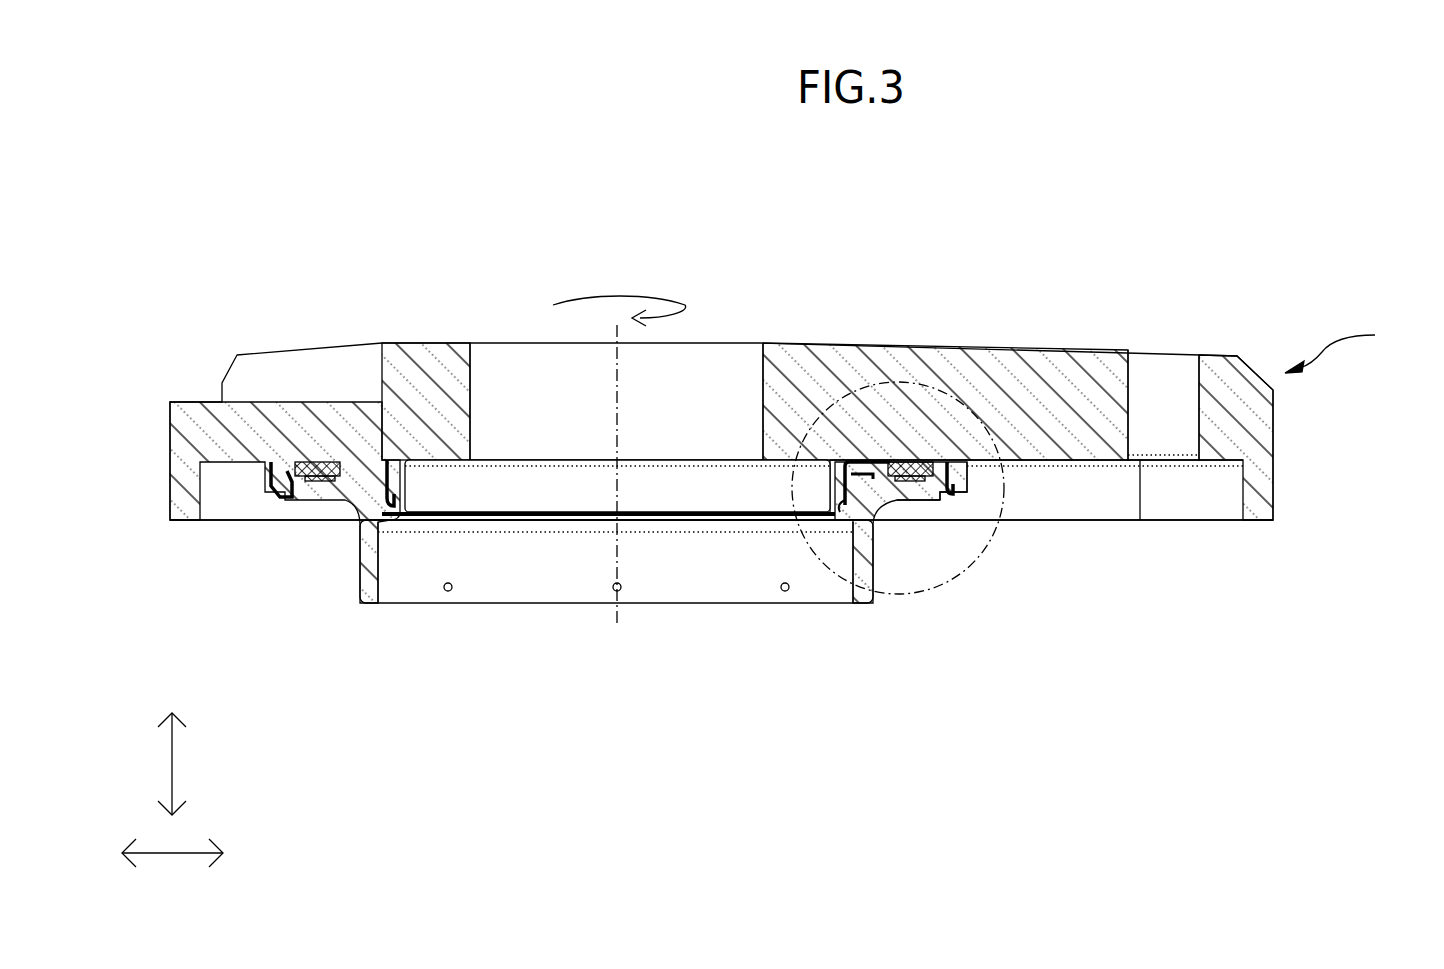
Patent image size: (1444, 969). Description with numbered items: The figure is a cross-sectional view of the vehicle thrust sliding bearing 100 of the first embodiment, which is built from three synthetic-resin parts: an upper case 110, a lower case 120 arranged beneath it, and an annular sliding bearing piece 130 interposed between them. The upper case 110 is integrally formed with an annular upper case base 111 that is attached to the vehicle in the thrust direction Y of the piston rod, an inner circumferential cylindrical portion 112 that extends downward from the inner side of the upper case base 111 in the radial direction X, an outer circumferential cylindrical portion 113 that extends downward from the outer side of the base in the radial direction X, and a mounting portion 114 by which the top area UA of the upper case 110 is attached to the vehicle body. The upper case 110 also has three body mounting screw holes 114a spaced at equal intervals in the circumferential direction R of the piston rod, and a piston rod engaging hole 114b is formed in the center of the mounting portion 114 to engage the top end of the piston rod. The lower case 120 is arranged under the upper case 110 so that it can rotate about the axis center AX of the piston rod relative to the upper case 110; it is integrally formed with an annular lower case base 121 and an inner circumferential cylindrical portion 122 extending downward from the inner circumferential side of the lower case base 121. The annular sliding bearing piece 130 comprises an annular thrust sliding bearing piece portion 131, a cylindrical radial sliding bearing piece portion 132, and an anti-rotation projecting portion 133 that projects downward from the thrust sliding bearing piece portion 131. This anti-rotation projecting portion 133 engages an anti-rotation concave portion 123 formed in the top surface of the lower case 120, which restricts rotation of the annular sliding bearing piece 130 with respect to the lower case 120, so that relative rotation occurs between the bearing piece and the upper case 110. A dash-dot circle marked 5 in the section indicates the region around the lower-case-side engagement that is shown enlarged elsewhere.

The vehicle thrust sliding bearing 100 is at (106, 168).
The upper case 110 is at (1293, 252).
The upper case base 111 is at (900, 447).
The inner circumferential cylindrical portion 112 is at (843, 465).
The outer circumferential cylindrical portion 113 is at (963, 468).
The mounting portion 114 is at (1228, 376).
The body mounting screw holes 114a is at (1160, 405).
The piston rod engaging hole 114b is at (707, 405).
The lower case 120 is at (1150, 667).
The lower case base 121 is at (927, 497).
The inner circumferential cylindrical portion 122 is at (863, 600).
The anti-rotation concave portion 123 is at (905, 487).
The annular sliding bearing piece 130 is at (413, 253).
The thrust sliding bearing piece portion 131 is at (317, 460).
The radial sliding bearing piece portion 132 is at (387, 477).
The anti-rotation projecting portion 133 is at (360, 463).
The enlarged detail region 5 is at (1005, 545).
The axis center AX is at (620, 608).
The circumferential direction R is at (619, 296).
The top area UA is at (1352, 345).
The radial direction X is at (172, 865).
The thrust direction Y is at (160, 764).